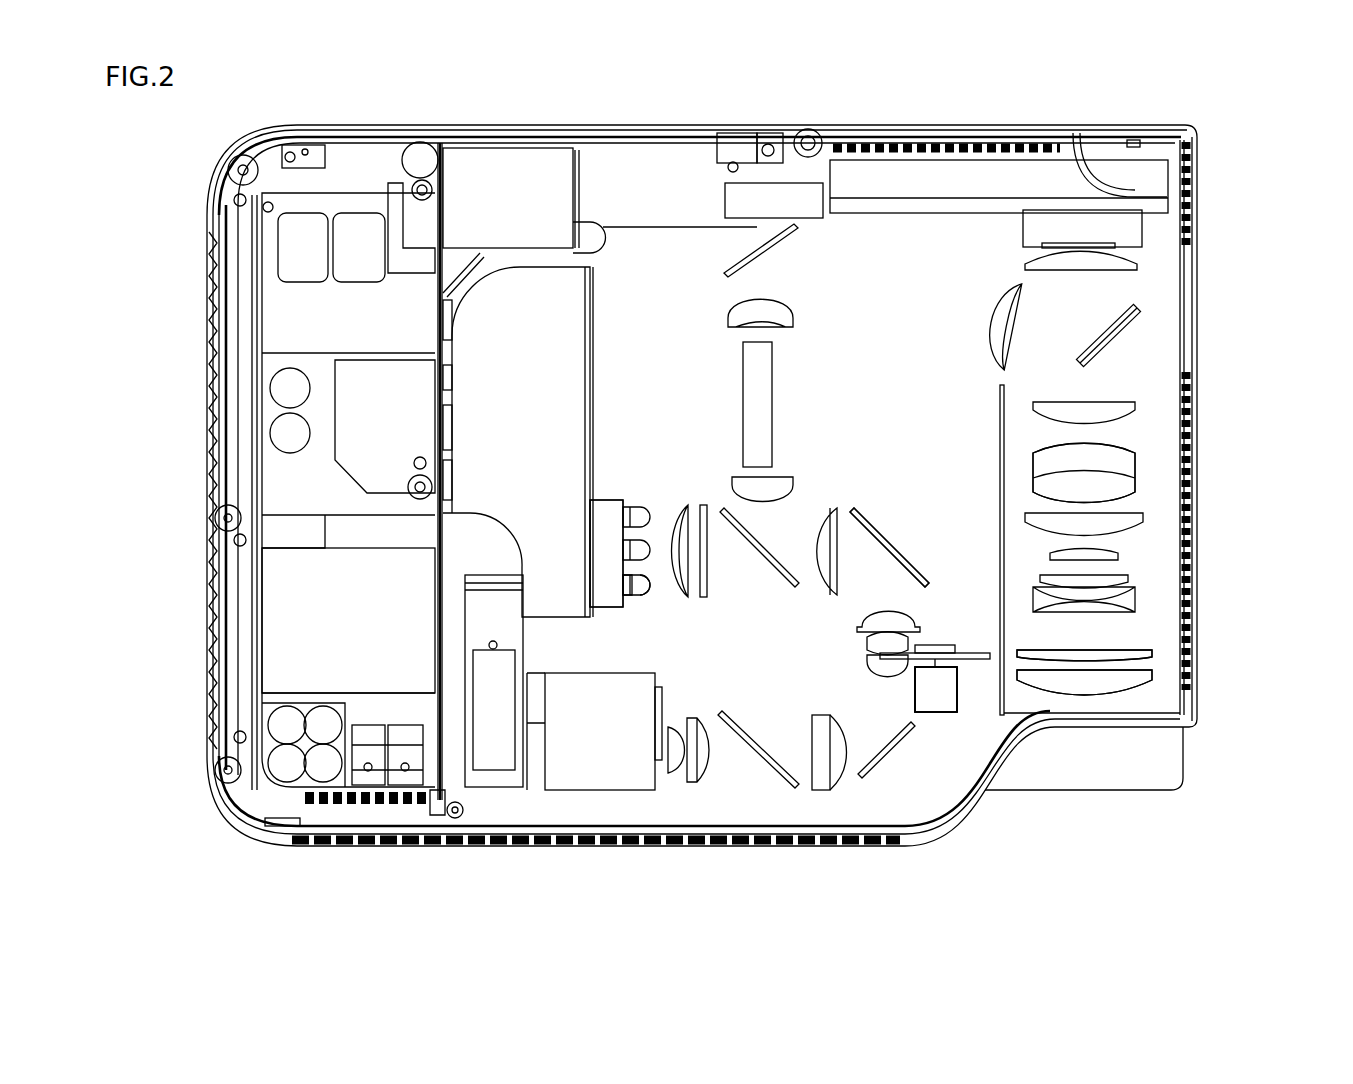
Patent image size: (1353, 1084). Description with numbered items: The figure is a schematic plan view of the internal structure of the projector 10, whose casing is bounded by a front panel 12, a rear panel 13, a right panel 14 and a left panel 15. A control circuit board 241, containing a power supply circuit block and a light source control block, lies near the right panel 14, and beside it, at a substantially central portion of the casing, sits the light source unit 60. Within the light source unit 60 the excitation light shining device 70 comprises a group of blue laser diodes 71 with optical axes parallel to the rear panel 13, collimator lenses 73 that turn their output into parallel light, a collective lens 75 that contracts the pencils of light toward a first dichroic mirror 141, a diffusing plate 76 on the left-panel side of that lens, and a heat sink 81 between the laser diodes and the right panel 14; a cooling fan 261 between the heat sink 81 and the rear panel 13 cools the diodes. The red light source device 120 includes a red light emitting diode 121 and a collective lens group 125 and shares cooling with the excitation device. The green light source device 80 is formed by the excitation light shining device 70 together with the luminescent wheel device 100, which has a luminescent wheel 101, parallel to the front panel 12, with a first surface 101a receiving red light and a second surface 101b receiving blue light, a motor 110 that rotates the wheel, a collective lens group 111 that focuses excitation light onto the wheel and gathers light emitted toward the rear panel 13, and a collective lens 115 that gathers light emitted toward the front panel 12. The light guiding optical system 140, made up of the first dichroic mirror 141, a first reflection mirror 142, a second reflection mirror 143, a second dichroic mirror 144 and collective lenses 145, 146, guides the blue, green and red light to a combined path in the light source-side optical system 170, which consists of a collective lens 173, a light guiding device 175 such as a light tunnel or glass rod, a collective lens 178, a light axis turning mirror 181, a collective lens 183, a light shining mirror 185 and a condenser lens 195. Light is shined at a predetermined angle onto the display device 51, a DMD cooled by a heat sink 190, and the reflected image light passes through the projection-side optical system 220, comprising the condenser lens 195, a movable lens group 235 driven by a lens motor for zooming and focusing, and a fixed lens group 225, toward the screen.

The projector 10 is at (1200, 110).
The front panel 12 is at (363, 848).
The rear panel 13 is at (541, 125).
The right panel 14 is at (205, 342).
The left panel 15 is at (1193, 658).
The display device 51 is at (1122, 245).
The light source unit 60 is at (560, 443).
The excitation light shining device 70 is at (637, 490).
The blue laser diodes 71 is at (632, 598).
The collimator lenses 73 is at (647, 598).
The collective lens 75 is at (676, 540).
The diffusing plate 76 is at (702, 520).
The green light source device 80 is at (794, 667).
The heat sink 81 is at (560, 340).
The luminescent wheel device 100 is at (931, 705).
The luminescent wheel 101 is at (979, 660).
The first surface 101a is at (1000, 700).
The second surface 101b is at (999, 693).
The motor 110 is at (940, 705).
The collective lens group 111 is at (865, 631).
The collective lens 115 is at (870, 672).
The red light source device 120 is at (648, 765).
The red light emitting diode 121 is at (674, 775).
The collective lens group 125 is at (690, 780).
The light guiding optical system 140 is at (897, 522).
The first dichroic mirror 141 is at (757, 548).
The first reflection mirror 142 is at (888, 547).
The second reflection mirror 143 is at (882, 760).
The second dichroic mirror 144 is at (757, 735).
The collective lens 145 is at (835, 515).
The collective lens 146 is at (822, 780).
The light source-side optical system 170 is at (757, 237).
The collective lens 173 is at (790, 485).
The light guiding device 175 is at (765, 380).
The collective lens 178 is at (770, 303).
The light axis turning mirror 181 is at (773, 257).
The collective lens 183 is at (1015, 308).
The light shining mirror 185 is at (1115, 341).
The heat sink 190 is at (1047, 170).
The condenser lens 195 is at (1128, 262).
The projection-side optical system 220 is at (1140, 488).
The fixed lens group 225 is at (1117, 683).
The movable lens group 235 is at (1135, 435).
The control circuit board 241 is at (325, 558).
The cooling fan 261 is at (468, 200).